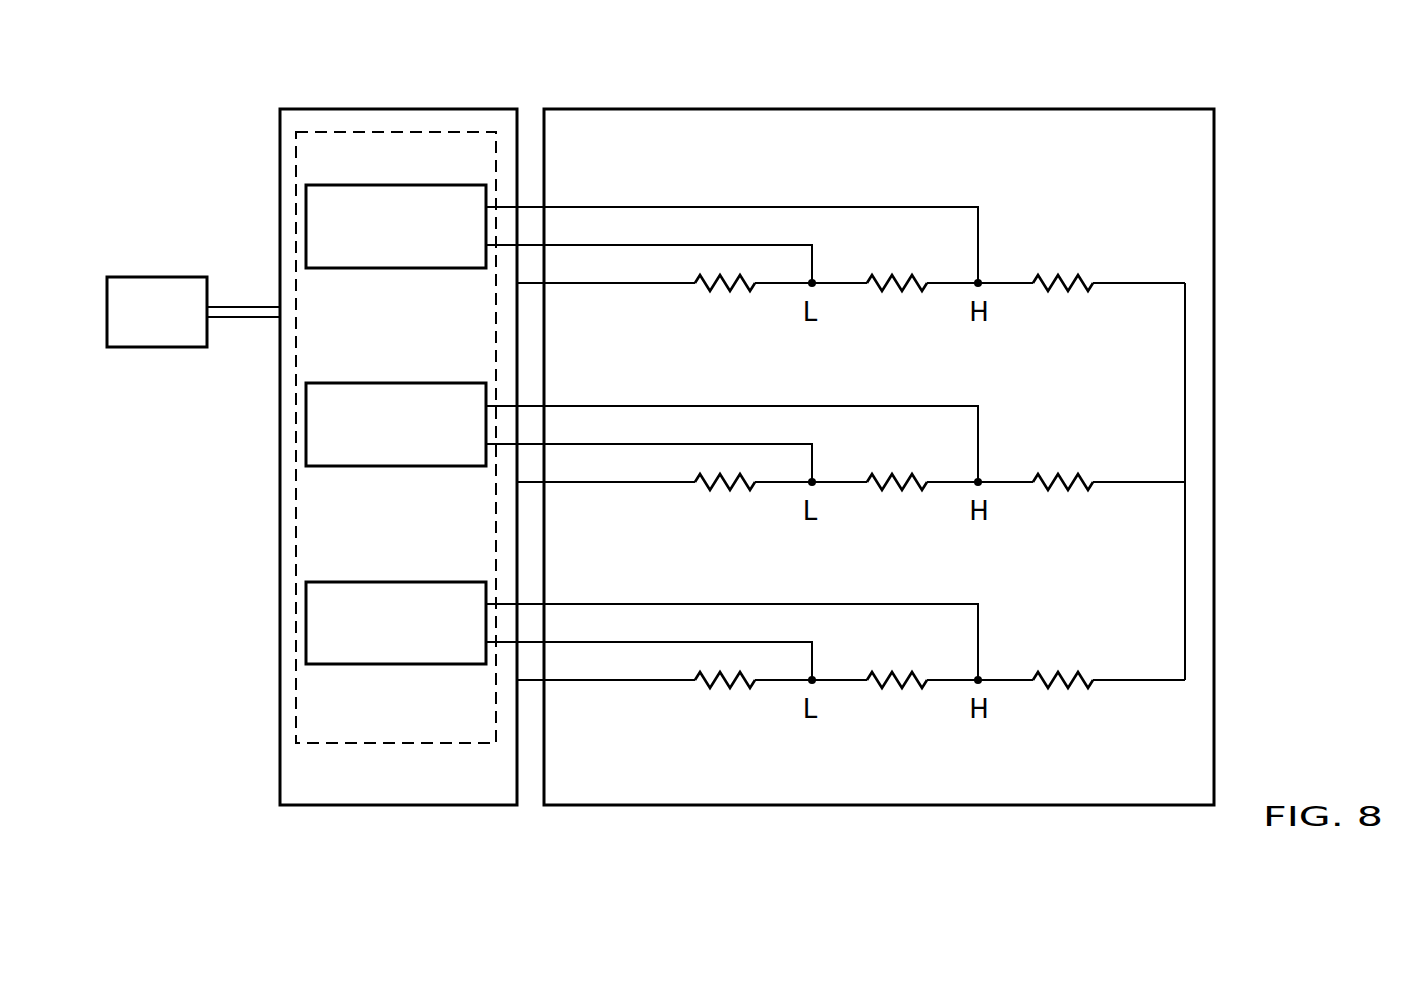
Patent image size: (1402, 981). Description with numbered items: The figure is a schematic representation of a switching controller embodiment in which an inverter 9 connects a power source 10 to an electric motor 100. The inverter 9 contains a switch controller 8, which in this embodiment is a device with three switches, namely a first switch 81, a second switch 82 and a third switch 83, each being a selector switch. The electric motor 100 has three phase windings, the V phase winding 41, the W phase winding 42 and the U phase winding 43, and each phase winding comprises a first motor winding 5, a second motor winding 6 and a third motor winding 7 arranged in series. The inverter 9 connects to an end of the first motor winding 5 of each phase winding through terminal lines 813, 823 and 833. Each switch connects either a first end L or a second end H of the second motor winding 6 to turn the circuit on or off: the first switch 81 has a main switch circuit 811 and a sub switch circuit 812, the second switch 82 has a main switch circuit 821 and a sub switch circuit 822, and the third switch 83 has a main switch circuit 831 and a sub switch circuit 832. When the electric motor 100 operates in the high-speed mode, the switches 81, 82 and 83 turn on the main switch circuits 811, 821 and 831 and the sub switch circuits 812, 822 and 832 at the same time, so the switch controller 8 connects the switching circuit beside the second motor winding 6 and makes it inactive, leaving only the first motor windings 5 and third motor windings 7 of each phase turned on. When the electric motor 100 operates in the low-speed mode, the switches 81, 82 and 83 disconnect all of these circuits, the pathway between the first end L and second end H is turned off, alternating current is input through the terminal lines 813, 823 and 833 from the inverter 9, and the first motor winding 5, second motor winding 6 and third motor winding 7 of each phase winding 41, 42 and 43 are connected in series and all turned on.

The first motor winding 5 is at (727, 297).
The second motor winding 6 is at (899, 297).
The third motor winding 7 is at (1065, 297).
The switch controller 8 is at (447, 130).
The inverter 9 is at (373, 108).
The power source 10 is at (158, 275).
The V phase winding 41 is at (1081, 250).
The W phase winding 42 is at (1081, 448).
The U phase winding 43 is at (1081, 646).
The first switch 81 is at (395, 270).
The second switch 82 is at (395, 468).
The third switch 83 is at (395, 666).
The electric motor 100 is at (892, 107).
The main switch circuit 811 is at (812, 253).
The sub switch circuit 812 is at (664, 205).
The terminal line 813 is at (585, 290).
The main switch circuit 821 is at (812, 452).
The sub switch circuit 822 is at (664, 404).
The terminal line 823 is at (585, 489).
The main switch circuit 831 is at (812, 650).
The sub switch circuit 832 is at (664, 602).
The terminal line 833 is at (585, 687).